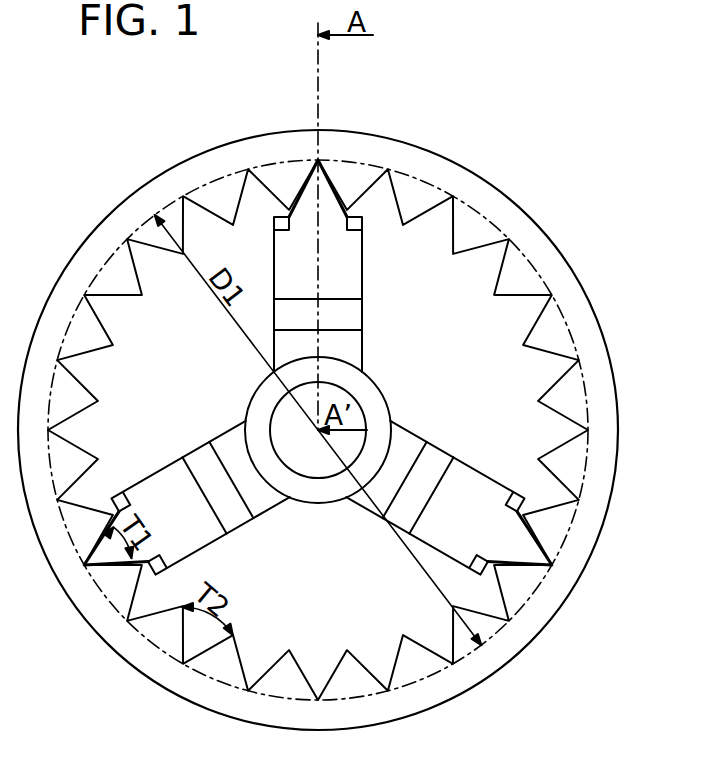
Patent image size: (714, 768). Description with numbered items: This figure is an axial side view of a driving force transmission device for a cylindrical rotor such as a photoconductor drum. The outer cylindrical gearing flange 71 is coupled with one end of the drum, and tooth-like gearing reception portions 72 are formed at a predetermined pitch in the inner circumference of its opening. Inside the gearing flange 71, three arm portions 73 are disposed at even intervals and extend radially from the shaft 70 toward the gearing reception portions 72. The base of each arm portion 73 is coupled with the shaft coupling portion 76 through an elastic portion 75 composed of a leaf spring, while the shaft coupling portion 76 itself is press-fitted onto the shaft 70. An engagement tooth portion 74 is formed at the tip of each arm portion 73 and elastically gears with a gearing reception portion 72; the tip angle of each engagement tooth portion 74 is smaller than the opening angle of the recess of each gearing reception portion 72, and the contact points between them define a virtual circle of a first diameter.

The shaft 70 is at (283, 417).
The gearing flange 71 is at (532, 232).
The gearing reception portions 72 is at (302, 187).
The arm portions 73 is at (350, 254).
The engagement tooth portions 74 is at (335, 183).
The elastic portions 75 is at (353, 312).
The shaft coupling portion 76 is at (370, 396).